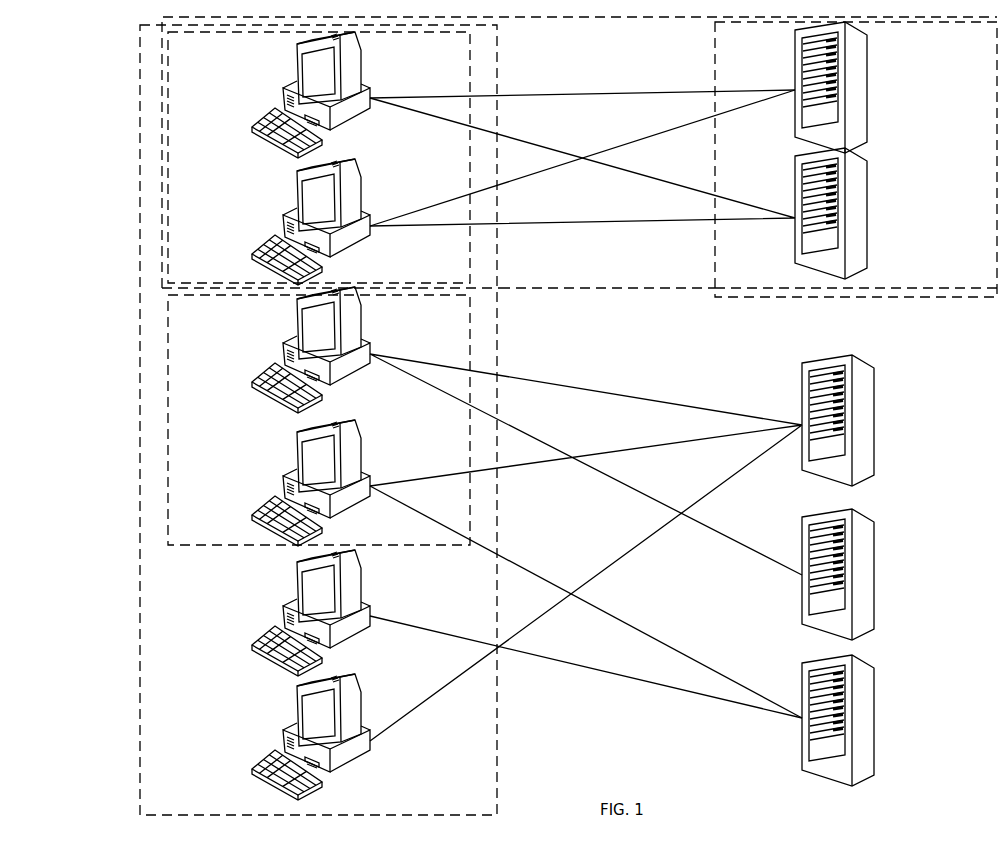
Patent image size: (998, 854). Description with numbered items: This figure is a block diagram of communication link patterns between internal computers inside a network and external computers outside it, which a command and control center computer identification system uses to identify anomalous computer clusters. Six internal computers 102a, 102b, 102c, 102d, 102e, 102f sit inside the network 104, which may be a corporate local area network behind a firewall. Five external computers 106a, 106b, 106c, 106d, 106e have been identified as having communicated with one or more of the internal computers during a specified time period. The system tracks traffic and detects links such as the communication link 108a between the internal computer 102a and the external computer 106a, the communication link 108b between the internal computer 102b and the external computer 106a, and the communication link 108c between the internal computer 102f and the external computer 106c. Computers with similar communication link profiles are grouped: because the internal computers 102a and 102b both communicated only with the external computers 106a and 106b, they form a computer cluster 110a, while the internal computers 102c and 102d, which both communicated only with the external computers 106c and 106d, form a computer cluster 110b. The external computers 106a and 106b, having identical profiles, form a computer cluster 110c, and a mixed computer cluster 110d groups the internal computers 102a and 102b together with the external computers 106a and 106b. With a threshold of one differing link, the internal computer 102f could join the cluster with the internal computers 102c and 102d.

The internal computer 102a is at (283, 93).
The internal computer 102b is at (283, 220).
The internal computer 102c is at (283, 348).
The internal computer 102d is at (283, 481).
The internal computer 102e is at (283, 611).
The internal computer 102f is at (283, 735).
The network 104 is at (140, 255).
The external computer 106a is at (867, 90).
The external computer 106b is at (867, 220).
The external computer 106c is at (874, 425).
The external computer 106d is at (874, 568).
The external computer 106e is at (874, 713).
The communication link 108a is at (570, 94).
The communication link 108b is at (612, 150).
The communication link 108c is at (580, 596).
The computer cluster 110a is at (168, 178).
The computer cluster 110b is at (168, 398).
The computer cluster 110c is at (745, 298).
The computer cluster 110d is at (612, 290).